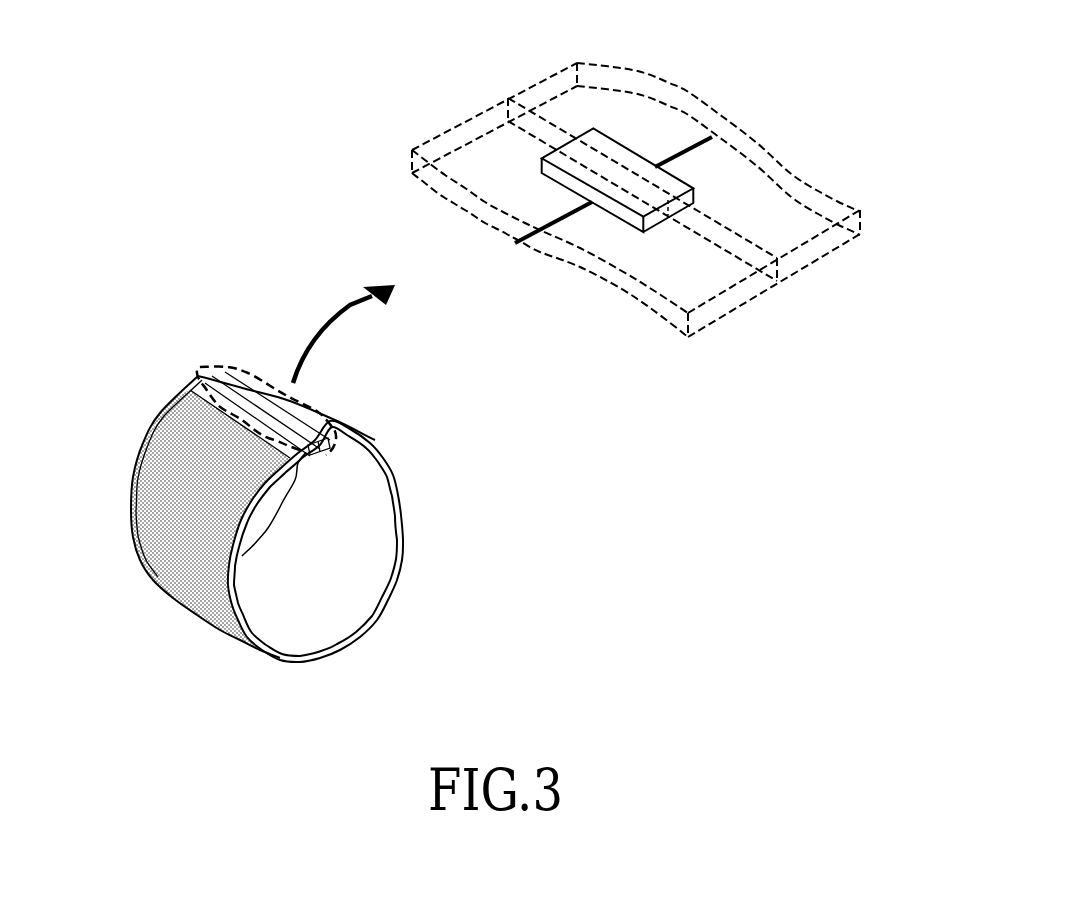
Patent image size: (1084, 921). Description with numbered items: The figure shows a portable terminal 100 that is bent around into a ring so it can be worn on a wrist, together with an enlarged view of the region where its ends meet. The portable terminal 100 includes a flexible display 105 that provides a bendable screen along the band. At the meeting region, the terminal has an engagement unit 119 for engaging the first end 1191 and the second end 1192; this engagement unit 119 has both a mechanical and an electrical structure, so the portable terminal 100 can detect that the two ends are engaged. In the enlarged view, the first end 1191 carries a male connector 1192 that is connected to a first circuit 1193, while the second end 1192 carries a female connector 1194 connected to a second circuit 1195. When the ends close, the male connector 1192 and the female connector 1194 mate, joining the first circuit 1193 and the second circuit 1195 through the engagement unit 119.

The portable terminal 100 is at (165, 350).
The flexible display 105 is at (168, 450).
The engagement unit 119 is at (452, 75).
The first end 1191 is at (753, 290).
The second end / male connector 1192 is at (548, 158).
The first circuit 1193 is at (570, 213).
The female connector 1194 is at (605, 142).
The second circuit 1195 is at (673, 158).